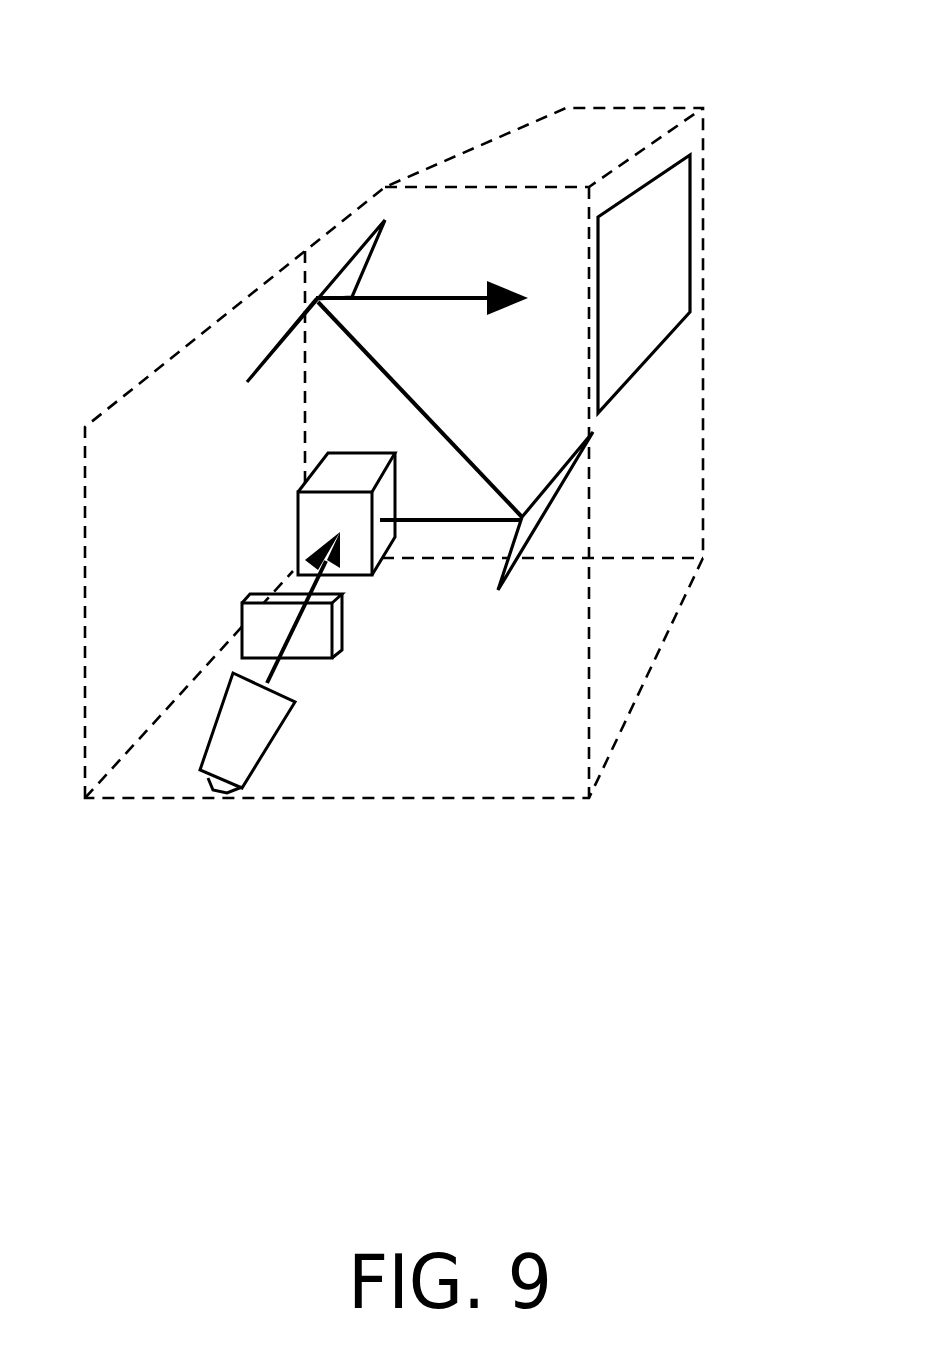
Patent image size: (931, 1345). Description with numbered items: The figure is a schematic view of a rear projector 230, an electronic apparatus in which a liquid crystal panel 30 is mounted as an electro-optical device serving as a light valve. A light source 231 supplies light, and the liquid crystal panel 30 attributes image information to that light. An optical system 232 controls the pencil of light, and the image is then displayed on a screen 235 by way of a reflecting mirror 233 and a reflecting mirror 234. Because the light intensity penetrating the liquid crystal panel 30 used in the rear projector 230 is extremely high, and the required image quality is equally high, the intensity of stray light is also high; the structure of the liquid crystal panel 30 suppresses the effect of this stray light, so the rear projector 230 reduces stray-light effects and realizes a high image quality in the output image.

The rear projector 230 is at (520, 110).
The light source 231 is at (242, 757).
The optical system 232 is at (314, 515).
The reflecting mirror 233 is at (293, 309).
The reflecting mirror 234 is at (553, 500).
The screen 235 is at (668, 250).
The liquid crystal panel 30 is at (258, 622).